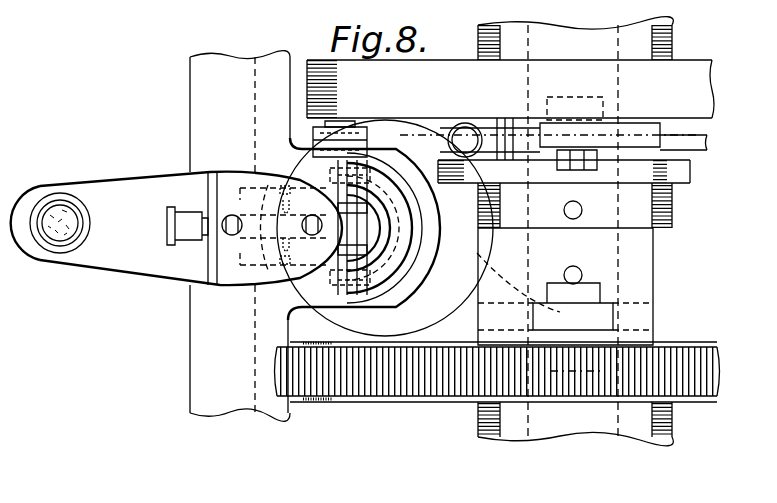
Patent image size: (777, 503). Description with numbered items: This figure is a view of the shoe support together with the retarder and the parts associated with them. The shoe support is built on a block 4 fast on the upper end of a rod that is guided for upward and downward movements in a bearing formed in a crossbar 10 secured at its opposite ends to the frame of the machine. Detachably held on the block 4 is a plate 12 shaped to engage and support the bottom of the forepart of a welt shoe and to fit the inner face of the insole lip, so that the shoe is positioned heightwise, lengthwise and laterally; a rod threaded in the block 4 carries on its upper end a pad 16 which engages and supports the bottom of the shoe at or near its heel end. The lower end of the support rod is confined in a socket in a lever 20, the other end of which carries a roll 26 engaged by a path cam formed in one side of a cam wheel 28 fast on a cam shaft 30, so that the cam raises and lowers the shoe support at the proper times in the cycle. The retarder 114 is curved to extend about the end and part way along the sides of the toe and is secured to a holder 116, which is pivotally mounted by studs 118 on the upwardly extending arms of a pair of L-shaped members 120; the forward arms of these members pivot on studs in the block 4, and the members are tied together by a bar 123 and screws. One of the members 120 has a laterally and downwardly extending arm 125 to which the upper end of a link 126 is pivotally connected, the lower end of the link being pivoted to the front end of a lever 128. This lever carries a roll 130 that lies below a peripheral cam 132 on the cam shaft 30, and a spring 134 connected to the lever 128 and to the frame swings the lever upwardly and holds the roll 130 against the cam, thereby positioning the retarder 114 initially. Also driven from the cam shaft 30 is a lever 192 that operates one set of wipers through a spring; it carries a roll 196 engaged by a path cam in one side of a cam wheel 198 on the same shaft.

The block 4 is at (127, 260).
The crossbar 10 is at (195, 370).
The plate 12 is at (227, 194).
The pad 16 is at (62, 232).
The lever 20 is at (480, 333).
The roll 26 is at (597, 363).
The cam wheel 28 is at (397, 385).
The cam shaft 30 is at (617, 418).
The retarder 114 is at (372, 230).
The holder 116 is at (383, 217).
The studs 118 is at (353, 197).
The L-shaped members 120 is at (330, 178).
The bar 123 is at (375, 205).
The arm 125 is at (380, 128).
The link 126 is at (327, 143).
The lever 128 is at (430, 143).
The roll 130 is at (540, 168).
The peripheral cam 132 is at (667, 180).
The spring 134 is at (465, 123).
The lever 192 is at (637, 133).
The roll 196 is at (593, 100).
The cam wheel 198 is at (705, 90).